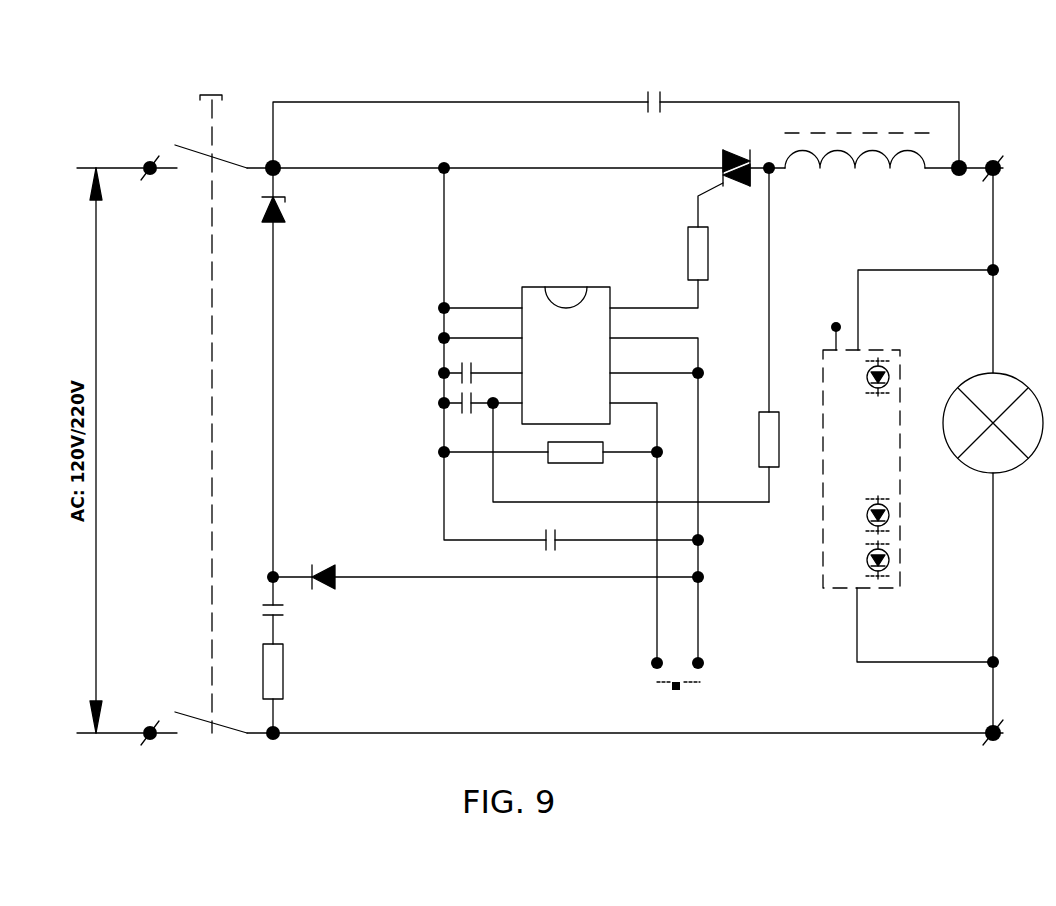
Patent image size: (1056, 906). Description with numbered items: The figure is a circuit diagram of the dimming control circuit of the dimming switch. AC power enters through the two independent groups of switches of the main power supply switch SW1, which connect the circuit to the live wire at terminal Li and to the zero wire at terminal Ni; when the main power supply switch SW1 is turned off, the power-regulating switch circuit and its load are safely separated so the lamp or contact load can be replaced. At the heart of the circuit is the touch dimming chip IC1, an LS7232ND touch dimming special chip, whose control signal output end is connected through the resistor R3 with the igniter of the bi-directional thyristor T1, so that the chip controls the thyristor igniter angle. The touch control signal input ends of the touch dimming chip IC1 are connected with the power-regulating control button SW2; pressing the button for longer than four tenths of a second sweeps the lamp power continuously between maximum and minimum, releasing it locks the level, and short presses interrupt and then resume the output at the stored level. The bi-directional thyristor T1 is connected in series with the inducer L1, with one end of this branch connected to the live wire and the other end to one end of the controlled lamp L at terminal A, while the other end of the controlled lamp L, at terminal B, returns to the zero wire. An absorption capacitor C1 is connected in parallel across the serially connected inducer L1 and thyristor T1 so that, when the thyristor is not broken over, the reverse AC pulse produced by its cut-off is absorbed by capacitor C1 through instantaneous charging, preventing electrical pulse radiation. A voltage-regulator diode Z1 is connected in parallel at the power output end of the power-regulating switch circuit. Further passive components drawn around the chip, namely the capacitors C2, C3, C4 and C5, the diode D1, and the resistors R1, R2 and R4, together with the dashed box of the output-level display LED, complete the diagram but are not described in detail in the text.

The main power supply switch SW1 is at (197, 394).
The line input terminal Li is at (262, 155).
The neutral input terminal Ni is at (261, 746).
The absorption capacitor C1 is at (653, 86).
The voltage-regulator diode Z1 is at (291, 210).
The capacitor C2 is at (290, 613).
The resistor R1 is at (290, 671).
The diode D1 is at (485, 564).
The capacitor C5 is at (616, 529).
The touch dimming chip IC1 is at (571, 458).
The capacitor C3 is at (436, 373).
The capacitor C4 is at (436, 403).
The resistor R4 is at (550, 466).
The bi-directional thyristor T1 is at (724, 175).
The resistor R3 is at (711, 253).
The inducer L1 is at (857, 170).
The resistor R2 is at (782, 335).
The power-regulating control button SW2 is at (750, 702).
The controlled lamp L is at (980, 450).
The lamp terminal A is at (928, 297).
The lamp terminal B is at (928, 628).
The output level LED display circuit LED is at (857, 442).